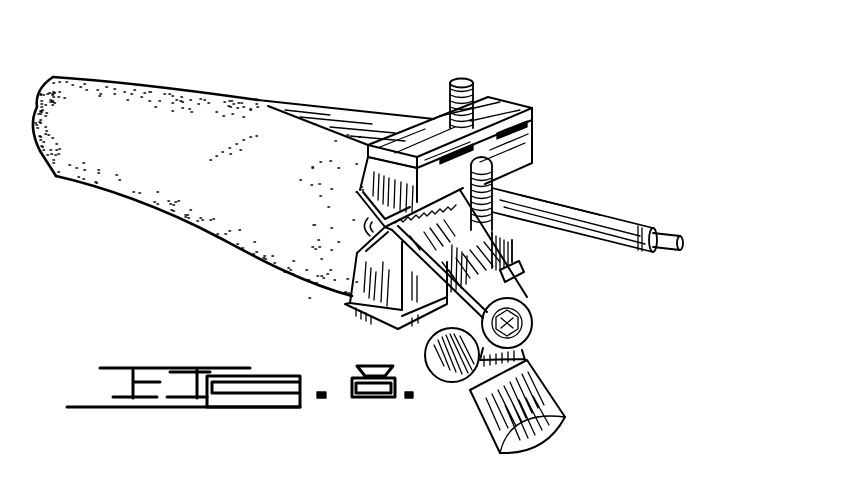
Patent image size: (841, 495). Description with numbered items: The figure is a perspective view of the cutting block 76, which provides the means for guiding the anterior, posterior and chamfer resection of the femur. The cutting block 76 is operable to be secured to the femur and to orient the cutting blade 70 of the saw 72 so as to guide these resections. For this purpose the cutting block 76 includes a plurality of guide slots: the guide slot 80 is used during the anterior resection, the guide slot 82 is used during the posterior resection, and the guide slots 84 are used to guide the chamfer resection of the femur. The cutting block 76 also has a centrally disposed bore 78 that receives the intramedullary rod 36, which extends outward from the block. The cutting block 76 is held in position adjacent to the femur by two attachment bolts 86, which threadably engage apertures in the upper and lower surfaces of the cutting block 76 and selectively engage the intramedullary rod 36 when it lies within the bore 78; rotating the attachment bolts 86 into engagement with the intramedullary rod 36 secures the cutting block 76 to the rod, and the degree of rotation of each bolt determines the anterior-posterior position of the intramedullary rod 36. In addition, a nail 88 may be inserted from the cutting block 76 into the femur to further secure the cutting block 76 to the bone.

The intramedullary rod 36 is at (683, 242).
The cutting blade 70 is at (483, 287).
The saw 72 is at (527, 370).
The cutting block 76 is at (687, 110).
The bore 78 is at (517, 175).
The guide slot 80 is at (380, 160).
The guide slot 82 is at (354, 300).
The guide slots 84 is at (533, 127).
The attachment bolts 86 is at (478, 88).
The nail 88 is at (362, 227).